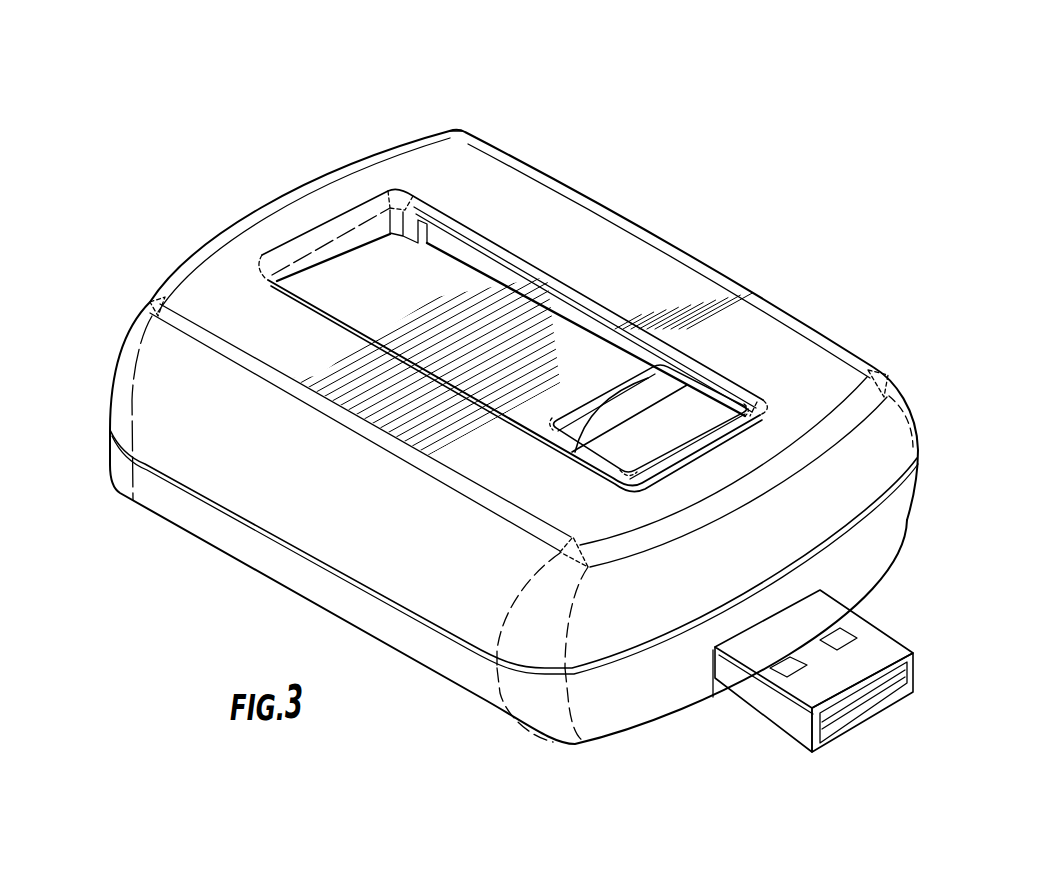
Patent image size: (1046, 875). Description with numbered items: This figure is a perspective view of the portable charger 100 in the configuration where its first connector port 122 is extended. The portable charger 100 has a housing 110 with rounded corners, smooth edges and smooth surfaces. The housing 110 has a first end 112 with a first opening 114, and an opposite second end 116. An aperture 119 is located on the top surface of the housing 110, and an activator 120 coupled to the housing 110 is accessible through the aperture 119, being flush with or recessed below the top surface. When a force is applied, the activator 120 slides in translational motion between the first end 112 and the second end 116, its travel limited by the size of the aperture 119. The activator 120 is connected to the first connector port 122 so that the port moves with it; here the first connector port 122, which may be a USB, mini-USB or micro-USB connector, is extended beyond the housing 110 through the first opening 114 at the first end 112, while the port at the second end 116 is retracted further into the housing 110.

The portable charger 100 is at (340, 82).
The housing 110 is at (513, 153).
The first end 112 is at (893, 528).
The first opening 114 is at (717, 677).
The second end 116 is at (112, 382).
The aperture 119 is at (503, 320).
The activator 120 is at (727, 420).
The first connector port 122 is at (877, 717).